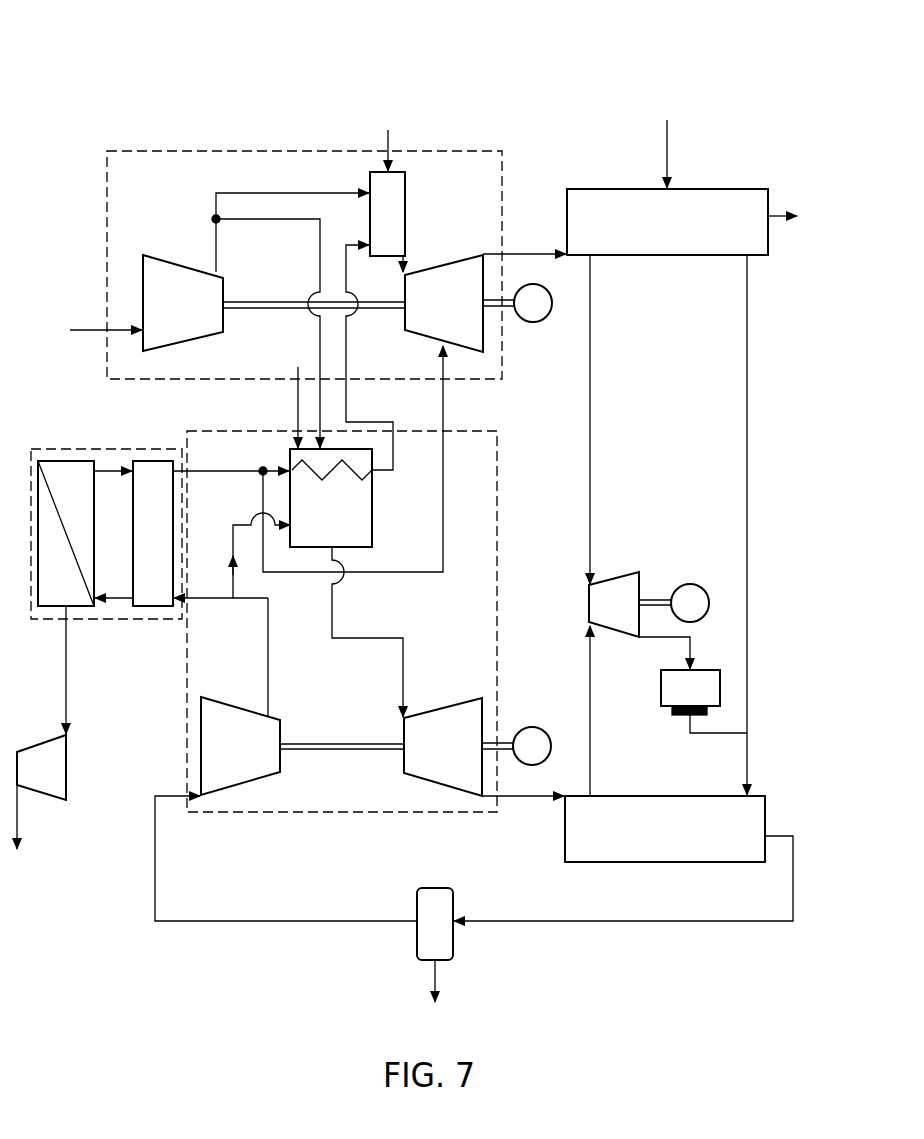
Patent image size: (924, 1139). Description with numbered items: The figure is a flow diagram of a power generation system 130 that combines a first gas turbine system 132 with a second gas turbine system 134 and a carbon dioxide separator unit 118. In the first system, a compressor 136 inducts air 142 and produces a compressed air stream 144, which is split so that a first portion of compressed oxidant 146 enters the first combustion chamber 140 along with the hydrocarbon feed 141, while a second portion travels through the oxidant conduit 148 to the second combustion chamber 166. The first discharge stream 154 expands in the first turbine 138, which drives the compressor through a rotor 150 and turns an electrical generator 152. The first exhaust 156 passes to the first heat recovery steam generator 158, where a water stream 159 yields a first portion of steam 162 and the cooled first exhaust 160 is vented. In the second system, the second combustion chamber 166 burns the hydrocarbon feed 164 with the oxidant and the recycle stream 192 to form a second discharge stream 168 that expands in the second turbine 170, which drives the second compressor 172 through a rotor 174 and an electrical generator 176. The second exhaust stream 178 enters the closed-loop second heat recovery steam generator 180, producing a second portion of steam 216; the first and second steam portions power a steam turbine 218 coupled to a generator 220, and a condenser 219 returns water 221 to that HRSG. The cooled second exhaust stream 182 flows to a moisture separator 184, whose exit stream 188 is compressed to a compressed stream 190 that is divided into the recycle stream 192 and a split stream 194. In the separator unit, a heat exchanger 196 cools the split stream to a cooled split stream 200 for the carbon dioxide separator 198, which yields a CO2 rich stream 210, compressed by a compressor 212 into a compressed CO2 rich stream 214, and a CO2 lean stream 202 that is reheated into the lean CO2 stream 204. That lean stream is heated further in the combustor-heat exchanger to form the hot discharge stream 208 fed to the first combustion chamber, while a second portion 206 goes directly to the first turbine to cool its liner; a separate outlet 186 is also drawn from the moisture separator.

The power generation system 130 is at (120, 45).
The first gas turbine system 132 is at (207, 150).
The second gas turbine system 134 is at (497, 488).
The carbon dioxide separator unit 118 is at (53, 449).
The first compressor 136 is at (181, 346).
The first turbine 138 is at (421, 338).
The first combustion chamber 140 is at (405, 200).
The hydrocarbon feed 141 is at (388, 142).
The air 142 is at (70, 329).
The compressed air stream 144 is at (215, 251).
The first portion of compressed oxidant 146 is at (215, 200).
The oxidant conduit 148 is at (266, 220).
The rotor 150 is at (292, 309).
The electrical generator 152 is at (534, 324).
The first discharge stream 154 is at (405, 262).
The first exhaust 156 is at (538, 253).
The first heat recovery steam generator 158 is at (612, 188).
The water stream 159 is at (667, 141).
The cooled first exhaust 160 is at (776, 214).
The first portion of steam 162 is at (590, 420).
The hydrocarbon feed 164 is at (298, 420).
The second combustion chamber 166 is at (372, 517).
The second discharge stream 168 is at (332, 610).
The second turbine 170 is at (440, 702).
The second compressor 172 is at (224, 698).
The rotor 174 is at (342, 742).
The electrical generator 176 is at (528, 725).
The second exhaust stream 178 is at (528, 798).
The second heat recovery steam generator 180 is at (664, 794).
The cooled second exhaust stream 182 is at (620, 922).
The moisture separator 184 is at (435, 887).
The outlet line 186 is at (435, 980).
The exit stream 188 is at (286, 886).
The compressed stream 190 is at (268, 656).
The recycle stream 192 is at (233, 580).
The split stream 194 is at (210, 599).
The heat exchanger 196 is at (150, 613).
The carbon dioxide separator 198 is at (52, 613).
The cooled split stream 200 is at (114, 601).
The CO2 lean stream 202 is at (110, 471).
The lean CO2 stream 204 is at (238, 471).
The second portion of CO2 lean gas 206 is at (263, 504).
The hot discharge stream 208 is at (346, 414).
The CO2 rich stream 210 is at (66, 687).
The compressor 212 is at (66, 771).
The compressed CO2 rich stream 214 is at (17, 818).
The second portion of steam 216 is at (590, 667).
The steam turbine 218 is at (612, 580).
The condenser 219 is at (720, 689).
The generator 220 is at (688, 582).
The water 221 is at (747, 761).